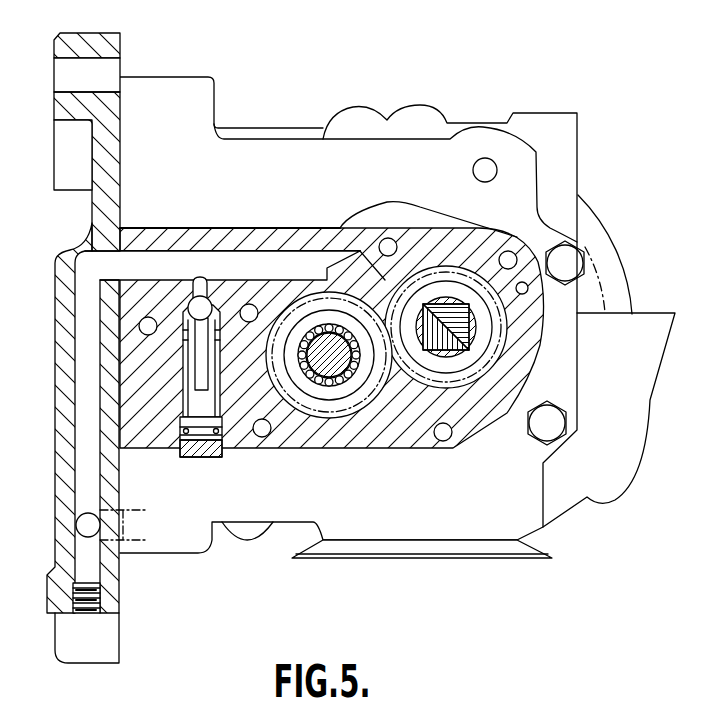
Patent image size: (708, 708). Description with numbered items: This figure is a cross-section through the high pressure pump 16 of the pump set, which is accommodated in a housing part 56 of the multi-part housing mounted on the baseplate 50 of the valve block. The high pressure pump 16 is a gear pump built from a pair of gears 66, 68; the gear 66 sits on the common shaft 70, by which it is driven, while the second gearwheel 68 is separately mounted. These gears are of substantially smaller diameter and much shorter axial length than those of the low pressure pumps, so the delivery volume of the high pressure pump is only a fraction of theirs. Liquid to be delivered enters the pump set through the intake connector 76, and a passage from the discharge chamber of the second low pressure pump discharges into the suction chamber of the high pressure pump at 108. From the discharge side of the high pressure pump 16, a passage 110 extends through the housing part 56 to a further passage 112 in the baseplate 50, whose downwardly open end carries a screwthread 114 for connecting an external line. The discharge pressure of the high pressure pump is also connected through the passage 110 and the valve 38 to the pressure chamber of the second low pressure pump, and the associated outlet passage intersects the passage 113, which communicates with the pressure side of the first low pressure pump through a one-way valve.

The high pressure pump 16 is at (383, 88).
The valve 38 is at (195, 303).
The baseplate 50 is at (96, 49).
The housing part 56 is at (300, 438).
The gear 66 is at (473, 383).
The second gearwheel 68 is at (347, 410).
The common shaft 70 is at (525, 366).
The intake connector 76 is at (457, 550).
The suction chamber inlet 108 is at (401, 398).
The passage 110 is at (250, 268).
The further passage 112 is at (85, 375).
The passage 113 is at (88, 513).
The screwthread 114 is at (90, 625).